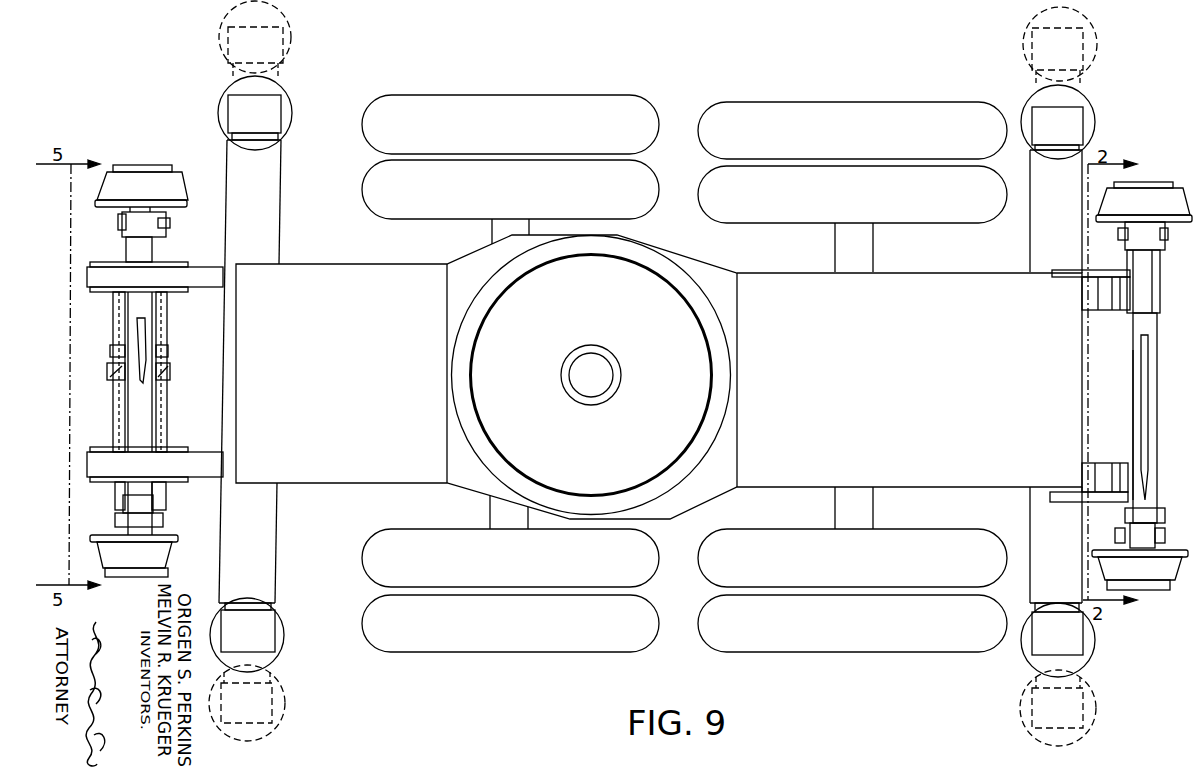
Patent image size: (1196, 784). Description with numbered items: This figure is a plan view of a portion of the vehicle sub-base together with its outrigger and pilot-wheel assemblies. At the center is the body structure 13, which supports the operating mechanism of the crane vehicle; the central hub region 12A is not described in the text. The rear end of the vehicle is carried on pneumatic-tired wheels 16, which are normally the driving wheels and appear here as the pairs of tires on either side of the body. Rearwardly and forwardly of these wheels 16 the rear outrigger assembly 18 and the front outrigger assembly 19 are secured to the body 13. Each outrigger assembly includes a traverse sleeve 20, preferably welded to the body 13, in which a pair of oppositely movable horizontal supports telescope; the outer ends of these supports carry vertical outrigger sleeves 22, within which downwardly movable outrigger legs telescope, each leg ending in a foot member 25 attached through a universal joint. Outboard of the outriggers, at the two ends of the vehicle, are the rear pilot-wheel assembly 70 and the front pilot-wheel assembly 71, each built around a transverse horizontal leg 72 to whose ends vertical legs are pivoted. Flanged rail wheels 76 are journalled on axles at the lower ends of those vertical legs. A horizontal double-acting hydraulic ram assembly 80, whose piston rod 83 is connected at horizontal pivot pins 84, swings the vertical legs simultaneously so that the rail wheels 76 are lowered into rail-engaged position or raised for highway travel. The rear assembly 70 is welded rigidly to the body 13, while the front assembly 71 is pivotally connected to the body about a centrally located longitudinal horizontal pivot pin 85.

The central hub 12A is at (579, 406).
The body structure 13 is at (337, 263).
The pneumatic-tired wheels 16 is at (707, 106).
The rear outrigger assembly 18 is at (1030, 228).
The front outrigger assembly 19 is at (281, 160).
The traverse sleeve 20 is at (277, 541).
The vertical outrigger sleeve 22 is at (277, 111).
The foot member 25 is at (281, 87).
The rear pilot-wheel assembly 70 is at (1153, 394).
The front pilot-wheel assembly 71 is at (170, 319).
The transverse horizontal leg 72 is at (153, 496).
The flanged rail wheel 76 is at (177, 182).
The horizontal double-acting hydraulic ram assembly 80 is at (153, 409).
The piston rod 83 is at (150, 263).
The horizontal pivot pin 84 is at (166, 224).
The longitudinal horizontal pivot pin 85 is at (170, 371).